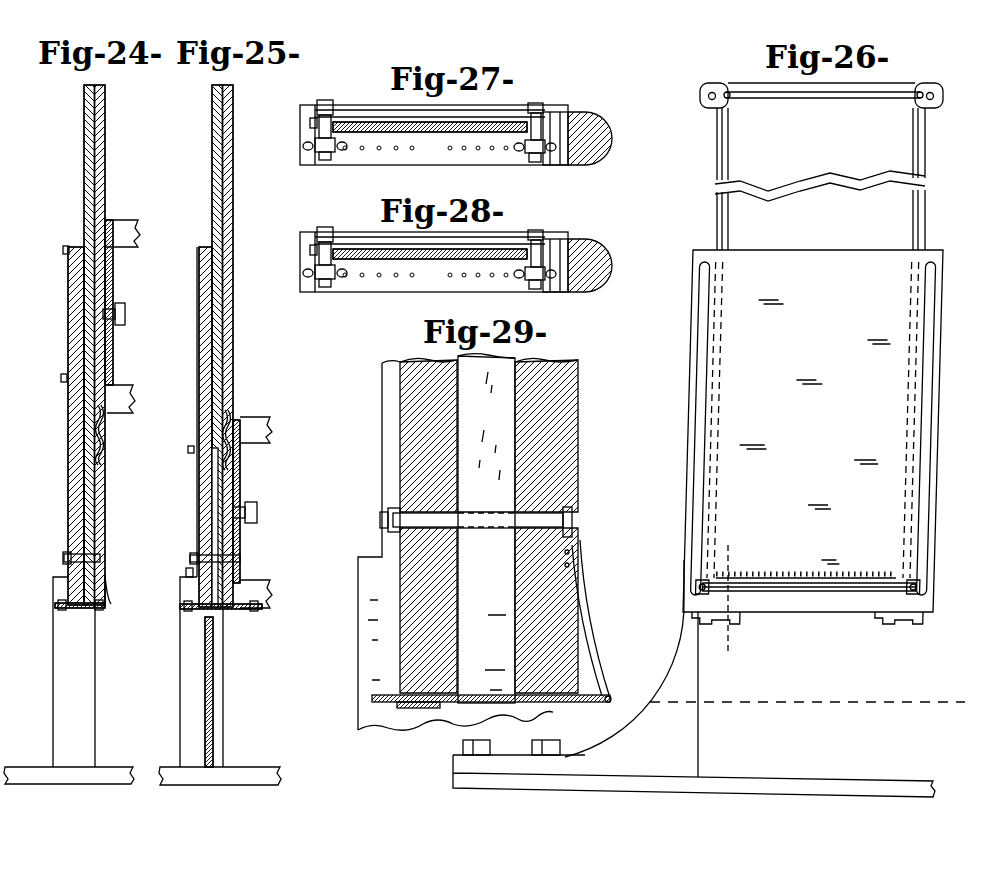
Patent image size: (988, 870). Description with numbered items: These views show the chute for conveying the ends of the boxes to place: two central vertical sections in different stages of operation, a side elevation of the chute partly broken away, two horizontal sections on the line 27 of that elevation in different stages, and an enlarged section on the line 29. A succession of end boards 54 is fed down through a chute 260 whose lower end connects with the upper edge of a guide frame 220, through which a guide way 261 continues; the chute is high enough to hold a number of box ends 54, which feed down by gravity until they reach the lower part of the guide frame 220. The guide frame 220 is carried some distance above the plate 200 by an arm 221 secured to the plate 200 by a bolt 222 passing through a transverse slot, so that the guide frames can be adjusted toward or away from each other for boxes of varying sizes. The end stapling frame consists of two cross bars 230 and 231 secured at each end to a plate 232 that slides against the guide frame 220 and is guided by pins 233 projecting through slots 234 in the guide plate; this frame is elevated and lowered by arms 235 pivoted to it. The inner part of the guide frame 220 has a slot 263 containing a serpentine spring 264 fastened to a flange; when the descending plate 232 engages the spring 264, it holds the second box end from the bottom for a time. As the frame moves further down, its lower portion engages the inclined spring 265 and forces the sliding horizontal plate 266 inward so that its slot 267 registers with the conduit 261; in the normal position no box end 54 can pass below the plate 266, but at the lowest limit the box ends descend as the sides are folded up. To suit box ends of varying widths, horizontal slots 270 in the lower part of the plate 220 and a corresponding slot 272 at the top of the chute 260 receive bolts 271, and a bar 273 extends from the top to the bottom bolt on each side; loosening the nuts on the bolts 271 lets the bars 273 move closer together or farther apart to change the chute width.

In FIG. 24, the end board 54 is at (92, 124).
In FIG. 25, the end board 54 is at (222, 115).
In FIG. 27, the end board 54 is at (472, 128).
In FIG. 28, the end board 54 is at (383, 260).
In FIG. 24, the plate 200 is at (75, 778).
In FIG. 25, the plate 200 is at (220, 778).
In FIG. 29, the plate 200 is at (550, 778).
In FIG. 24, the guide frame 220 is at (100, 360).
In FIG. 25, the guide frame 220 is at (233, 379).
In FIG. 27, the guide frame 220 is at (437, 157).
In FIG. 28, the guide frame 220 is at (457, 285).
In FIG. 29, the guide frame 220 is at (382, 452).
In FIG. 26, the guide frame 220 is at (813, 426).
In FIG. 24, the arm 221 is at (70, 631).
In FIG. 25, the arm 221 is at (195, 630).
In FIG. 27, the arm 221 is at (596, 149).
In FIG. 28, the arm 221 is at (603, 263).
In FIG. 26, the arm 221 is at (690, 678).
In FIG. 29, the bolt 222 is at (533, 745).
In FIG. 24, the cross bar 230 is at (130, 231).
In FIG. 25, the cross bar 230 is at (262, 433).
In FIG. 24, the cross bar 231 is at (114, 391).
In FIG. 25, the cross bar 231 is at (262, 586).
In FIG. 24, the plate 232 is at (110, 292).
In FIG. 25, the plate 232 is at (240, 553).
In FIG. 24, the pin 233 is at (63, 250).
In FIG. 25, the pin 233 is at (188, 450).
In FIG. 26, the slot 234 is at (700, 428).
In FIG. 24, the arm 235 is at (125, 309).
In FIG. 25, the arm 235 is at (258, 531).
In FIG. 24, the chute 260 is at (105, 165).
In FIG. 25, the chute 260 is at (212, 125).
In FIG. 26, the chute 260 is at (820, 169).
In FIG. 25, the guide way 261 is at (216, 484).
In FIG. 27, the guide way 261 is at (308, 128).
In FIG. 28, the guide way 261 is at (308, 263).
In FIG. 29, the guide way 261 is at (486, 615).
In FIG. 24, the slot 263 is at (101, 420).
In FIG. 25, the slot 263 is at (230, 419).
In FIG. 24, the serpentine spring 264 is at (101, 438).
In FIG. 25, the serpentine spring 264 is at (234, 421).
In FIG. 24, the inclined spring 265 is at (103, 602).
In FIG. 27, the inclined spring 265 is at (545, 111).
In FIG. 28, the inclined spring 265 is at (535, 239).
In FIG. 29, the inclined spring 265 is at (589, 674).
In FIG. 24, the sliding horizontal plate 266 is at (76, 612).
In FIG. 25, the sliding horizontal plate 266 is at (258, 609).
In FIG. 27, the sliding horizontal plate 266 is at (318, 100).
In FIG. 28, the sliding horizontal plate 266 is at (320, 229).
In FIG. 29, the sliding horizontal plate 266 is at (470, 703).
In FIG. 26, the sliding horizontal plate 266 is at (708, 619).
In FIG. 24, the slot 267 is at (98, 608).
In FIG. 25, the slot 267 is at (225, 612).
In FIG. 27, the slot 267 is at (540, 110).
In FIG. 28, the slot 267 is at (540, 254).
In FIG. 29, the slot 267 is at (548, 704).
In FIG. 26, the horizontal slot 270 is at (810, 591).
In FIG. 24, the bolt 271 is at (64, 558).
In FIG. 25, the bolt 271 is at (193, 556).
In FIG. 29, the bolt 271 is at (380, 519).
In FIG. 26, the bolt 271 is at (928, 90).
In FIG. 26, the slot 272 is at (790, 99).
In FIG. 29, the bar 273 is at (486, 433).
In FIG. 26, the bar 273 is at (729, 168).
In FIG. 26, the section line 27— 27 is at (636, 740).
In FIG. 26, the section line 29— 29 is at (765, 553).